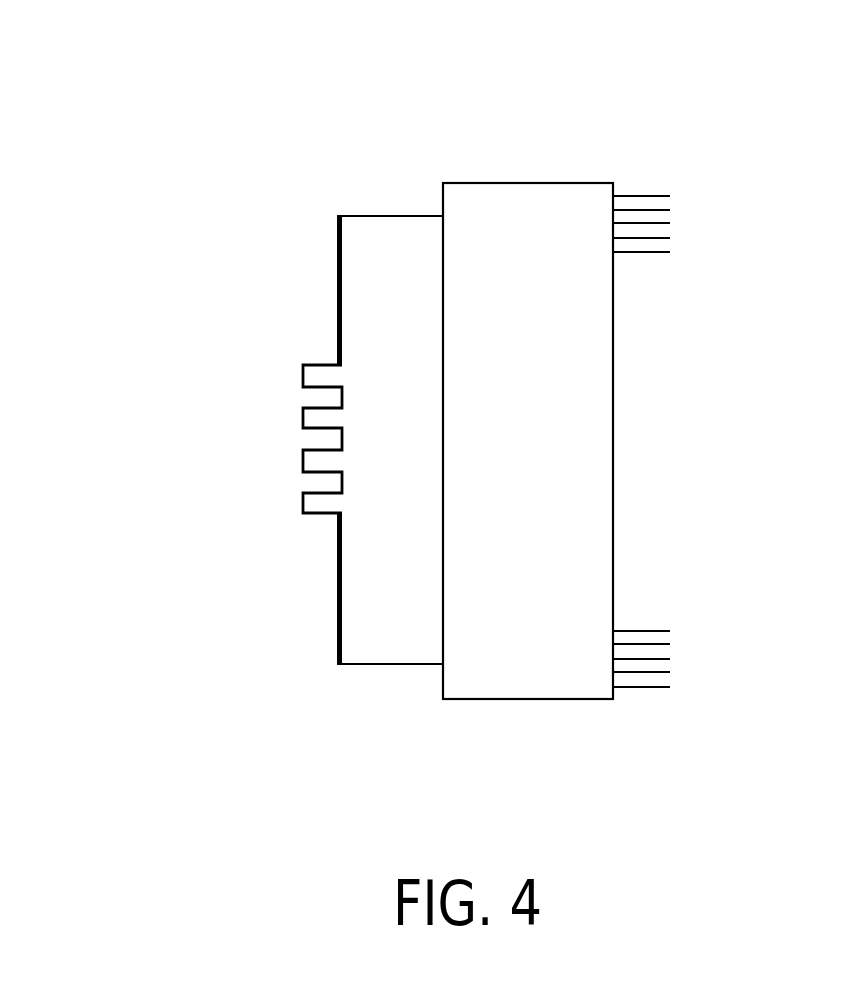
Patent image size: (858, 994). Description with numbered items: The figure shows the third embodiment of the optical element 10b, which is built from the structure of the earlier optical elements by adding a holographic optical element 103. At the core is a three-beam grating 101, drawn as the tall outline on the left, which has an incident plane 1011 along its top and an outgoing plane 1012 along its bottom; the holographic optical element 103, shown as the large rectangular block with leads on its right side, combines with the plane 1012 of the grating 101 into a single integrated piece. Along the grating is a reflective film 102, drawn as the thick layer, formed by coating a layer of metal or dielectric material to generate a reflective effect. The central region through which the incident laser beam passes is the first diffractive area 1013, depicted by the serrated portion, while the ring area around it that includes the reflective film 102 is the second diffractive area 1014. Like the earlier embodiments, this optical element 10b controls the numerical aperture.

The optical element 10b is at (778, 152).
The three-beam grating 101 is at (385, 655).
The incident plane 1011 is at (352, 248).
The outgoing plane 1012 is at (428, 636).
The first diffractive area 1013 is at (255, 460).
The second diffractive area 1014 is at (332, 272).
The reflective film 102 is at (337, 603).
The holographic optical element 103 is at (584, 408).